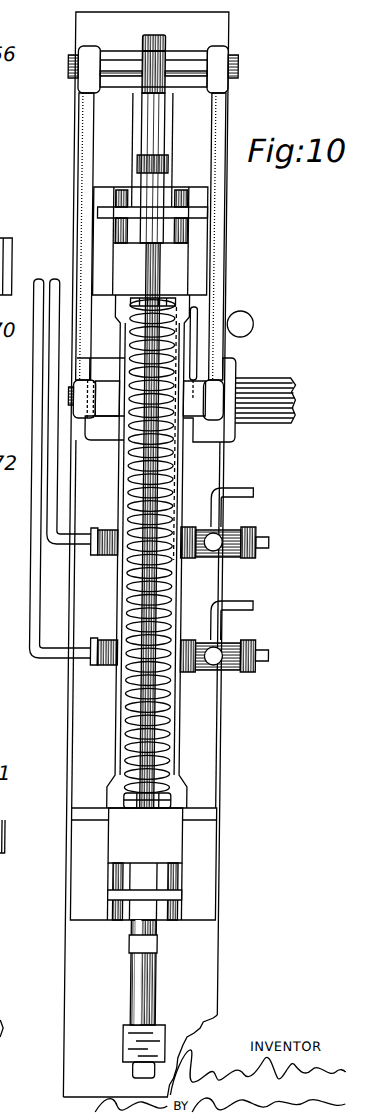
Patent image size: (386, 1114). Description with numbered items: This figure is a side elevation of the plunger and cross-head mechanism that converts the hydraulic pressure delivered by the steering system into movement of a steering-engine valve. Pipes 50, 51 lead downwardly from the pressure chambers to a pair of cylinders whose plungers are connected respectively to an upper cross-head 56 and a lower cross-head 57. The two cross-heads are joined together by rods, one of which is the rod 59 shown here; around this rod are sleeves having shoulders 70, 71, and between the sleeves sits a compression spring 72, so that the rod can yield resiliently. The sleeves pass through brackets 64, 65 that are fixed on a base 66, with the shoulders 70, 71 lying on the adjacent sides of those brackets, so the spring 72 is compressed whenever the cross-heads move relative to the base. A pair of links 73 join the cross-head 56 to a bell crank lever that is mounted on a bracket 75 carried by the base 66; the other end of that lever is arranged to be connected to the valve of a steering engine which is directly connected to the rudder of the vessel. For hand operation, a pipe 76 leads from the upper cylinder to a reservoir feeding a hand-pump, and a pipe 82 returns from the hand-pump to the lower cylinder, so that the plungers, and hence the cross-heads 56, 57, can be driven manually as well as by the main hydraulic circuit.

The cross-head 56 is at (193, 58).
The links 73 is at (89, 112).
The bracket 64 is at (198, 267).
The shoulder 70 is at (178, 303).
The bracket 75 is at (138, 551).
The pipe 76 is at (248, 489).
The pipe 82 is at (247, 601).
The base 66 is at (212, 714).
The compression spring 72 is at (178, 748).
The shoulder 71 is at (177, 804).
The bracket 65 is at (212, 817).
The rod 59 is at (159, 995).
The cross-head 57 is at (137, 1043).
The pipe 50 is at (37, 619).
The pipe 51 is at (69, 543).